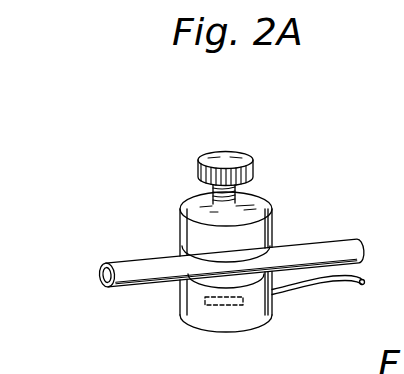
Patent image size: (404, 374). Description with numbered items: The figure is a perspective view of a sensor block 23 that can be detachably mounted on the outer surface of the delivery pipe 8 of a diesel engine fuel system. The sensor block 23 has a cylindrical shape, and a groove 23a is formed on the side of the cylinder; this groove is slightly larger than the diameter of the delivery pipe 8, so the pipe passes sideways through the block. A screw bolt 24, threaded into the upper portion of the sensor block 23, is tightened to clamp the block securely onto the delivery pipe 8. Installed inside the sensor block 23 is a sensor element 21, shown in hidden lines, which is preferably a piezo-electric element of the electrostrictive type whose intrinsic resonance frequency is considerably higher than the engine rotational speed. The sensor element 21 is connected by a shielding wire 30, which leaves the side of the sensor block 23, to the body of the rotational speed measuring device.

The delivery pipe 8 is at (292, 251).
The sensor element 21 is at (212, 307).
The sensor block 23 is at (181, 221).
The groove 23a is at (203, 289).
The screw bolt 24 is at (231, 154).
The shielding wire 30 is at (304, 284).